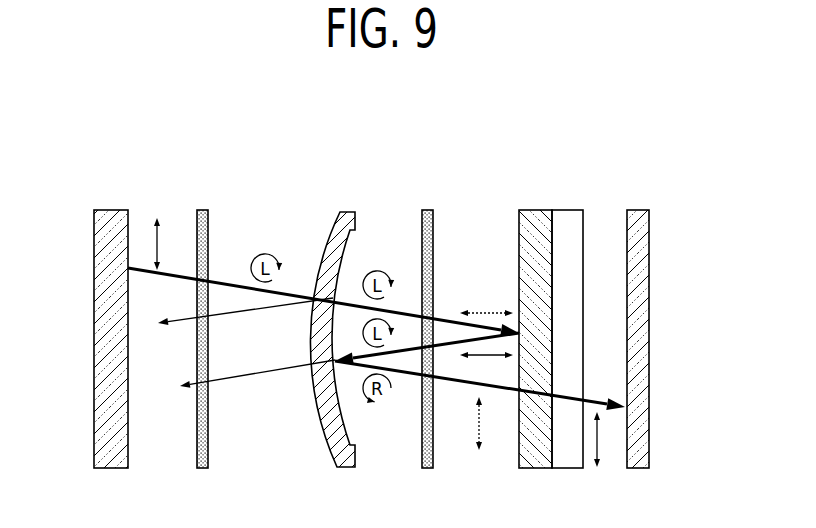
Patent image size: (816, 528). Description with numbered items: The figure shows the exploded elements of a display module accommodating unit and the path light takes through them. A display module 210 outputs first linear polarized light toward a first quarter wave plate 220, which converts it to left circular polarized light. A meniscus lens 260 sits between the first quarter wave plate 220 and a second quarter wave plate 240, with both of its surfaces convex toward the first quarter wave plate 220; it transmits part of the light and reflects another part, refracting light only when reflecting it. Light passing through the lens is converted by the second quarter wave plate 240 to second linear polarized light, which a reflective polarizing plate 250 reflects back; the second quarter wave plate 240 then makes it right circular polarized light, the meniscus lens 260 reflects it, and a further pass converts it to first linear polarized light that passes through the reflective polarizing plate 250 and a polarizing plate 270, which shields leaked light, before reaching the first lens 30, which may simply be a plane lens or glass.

The display module 210 is at (112, 228).
The first quarter wave plate 220 is at (202, 228).
The meniscus lens 260 is at (340, 225).
The second quarter wave plate 240 is at (432, 228).
The reflective polarizing plate 250 is at (533, 227).
The polarizing plate 270 is at (570, 227).
The first lens 30 is at (637, 227).